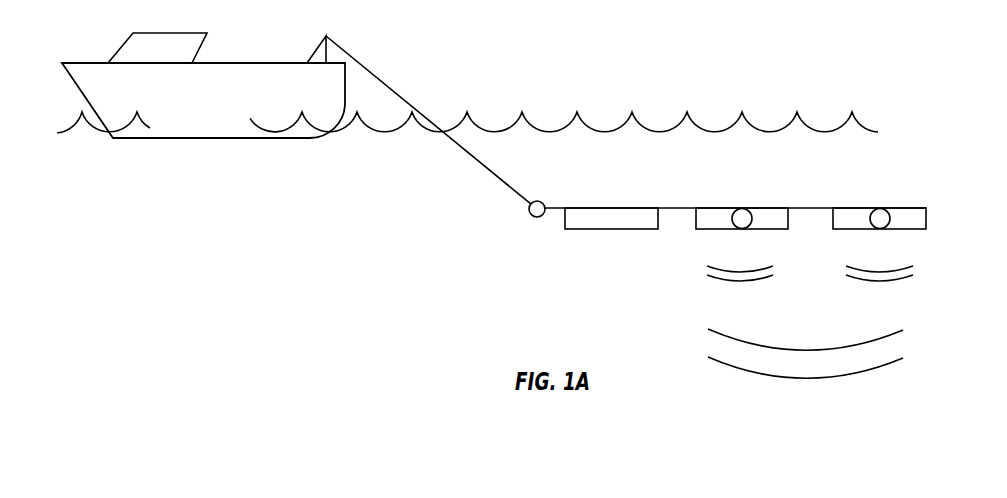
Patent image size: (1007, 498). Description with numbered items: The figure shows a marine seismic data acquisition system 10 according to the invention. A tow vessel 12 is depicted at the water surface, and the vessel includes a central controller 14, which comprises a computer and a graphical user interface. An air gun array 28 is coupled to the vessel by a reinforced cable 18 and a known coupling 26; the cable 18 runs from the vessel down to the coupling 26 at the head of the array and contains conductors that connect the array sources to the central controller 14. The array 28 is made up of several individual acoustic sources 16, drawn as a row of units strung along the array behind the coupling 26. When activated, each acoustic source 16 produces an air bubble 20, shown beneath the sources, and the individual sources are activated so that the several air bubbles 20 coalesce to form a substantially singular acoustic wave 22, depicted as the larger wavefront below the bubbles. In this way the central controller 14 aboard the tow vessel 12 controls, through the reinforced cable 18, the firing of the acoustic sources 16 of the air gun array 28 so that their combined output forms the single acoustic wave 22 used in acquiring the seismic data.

The marine seismic data acquisition system 10 is at (611, 59).
The tow vessel 12 is at (233, 63).
The central controller 14 is at (82, 62).
The acoustic sources 16 is at (740, 230).
The reinforced cable 18 is at (367, 70).
The air bubble 20 is at (720, 290).
The acoustic wave 22 is at (797, 385).
The coupling 26 is at (539, 201).
The air gun array 28 is at (592, 244).